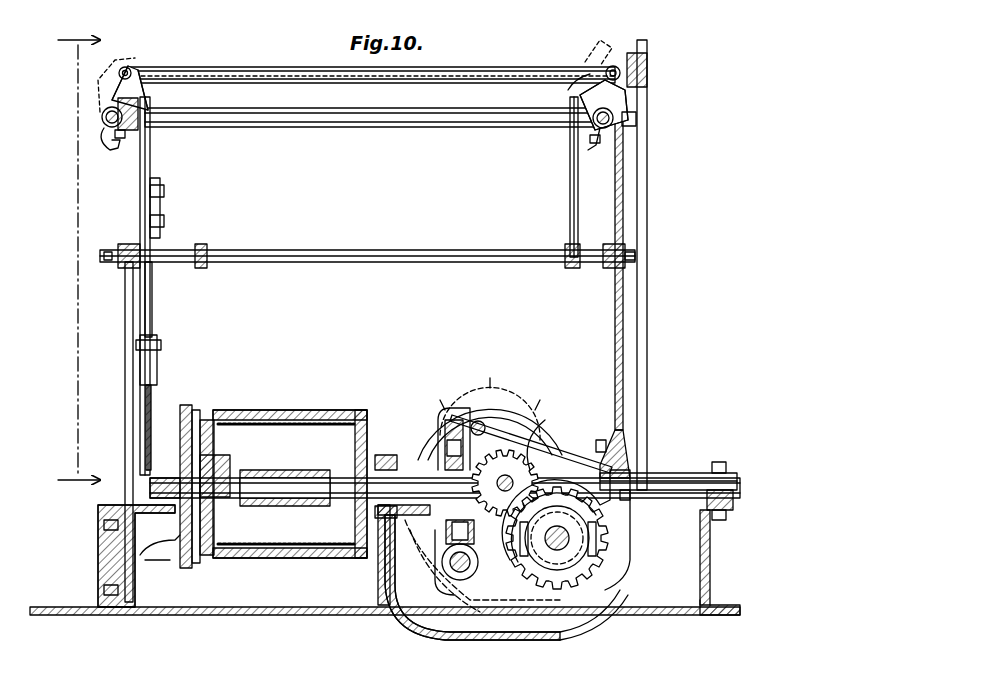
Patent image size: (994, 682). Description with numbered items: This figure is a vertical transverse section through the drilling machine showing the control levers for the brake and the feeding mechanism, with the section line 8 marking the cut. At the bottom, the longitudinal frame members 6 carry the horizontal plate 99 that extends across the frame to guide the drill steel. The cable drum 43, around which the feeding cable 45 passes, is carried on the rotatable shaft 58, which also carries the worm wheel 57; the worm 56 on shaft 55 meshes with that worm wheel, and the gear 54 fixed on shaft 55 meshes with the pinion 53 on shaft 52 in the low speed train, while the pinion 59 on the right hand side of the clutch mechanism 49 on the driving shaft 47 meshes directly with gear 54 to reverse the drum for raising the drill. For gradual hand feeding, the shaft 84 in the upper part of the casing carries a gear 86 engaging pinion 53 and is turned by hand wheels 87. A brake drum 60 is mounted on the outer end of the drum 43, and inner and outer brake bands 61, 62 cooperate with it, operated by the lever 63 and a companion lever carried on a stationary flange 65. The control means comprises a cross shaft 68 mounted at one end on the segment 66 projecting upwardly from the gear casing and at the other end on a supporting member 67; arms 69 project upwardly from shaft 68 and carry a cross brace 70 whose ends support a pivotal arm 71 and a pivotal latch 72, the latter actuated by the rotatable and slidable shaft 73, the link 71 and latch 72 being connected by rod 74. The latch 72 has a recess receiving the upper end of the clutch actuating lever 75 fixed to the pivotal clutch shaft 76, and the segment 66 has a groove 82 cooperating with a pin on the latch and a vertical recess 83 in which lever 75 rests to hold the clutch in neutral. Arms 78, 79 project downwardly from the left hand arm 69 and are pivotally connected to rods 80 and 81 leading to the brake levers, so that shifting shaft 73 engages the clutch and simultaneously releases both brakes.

The braces 8 is at (69, 263).
The rod 74 is at (227, 69).
The cross brace 70 is at (362, 110).
The pivotal arm 71 is at (142, 80).
The shaft 73 is at (112, 135).
The arms 69 is at (150, 158).
The cross shaft 68 is at (412, 250).
The arm 79 is at (207, 246).
The arm 78 is at (152, 295).
The rod 80 is at (157, 362).
The supporting member 67 is at (126, 378).
The lever 63 is at (150, 466).
The inner brake band 61 is at (185, 408).
The outer brake band 62 is at (197, 412).
The brake drum 60 is at (210, 420).
The drum 43 is at (272, 412).
The cable 45 is at (286, 459).
The shaft 58 is at (388, 455).
The longitudinal frame members 6 is at (100, 510).
The stationary flange 65 is at (185, 545).
The horizontal plate 99 is at (272, 607).
The clutch actuating lever 75 is at (648, 190).
The segment 66 is at (644, 265).
The pivotal latch 72 is at (648, 82).
The groove 82 is at (630, 110).
The rod 81 is at (630, 130).
The vertical recess 83 is at (636, 120).
The hand wheels 87 is at (500, 380).
The shaft 84 is at (505, 410).
The gear 86 is at (486, 428).
The shaft 52 is at (540, 435).
The pinion 53 is at (545, 455).
The shaft 47 is at (580, 548).
The pinion 59 is at (585, 575).
The clutch mechanism 49 is at (570, 585).
The worm 56 is at (478, 565).
The worm wheel 57 is at (474, 545).
The shaft 55 is at (415, 590).
The gear 54 is at (490, 600).
The clutch shaft 76 is at (670, 475).